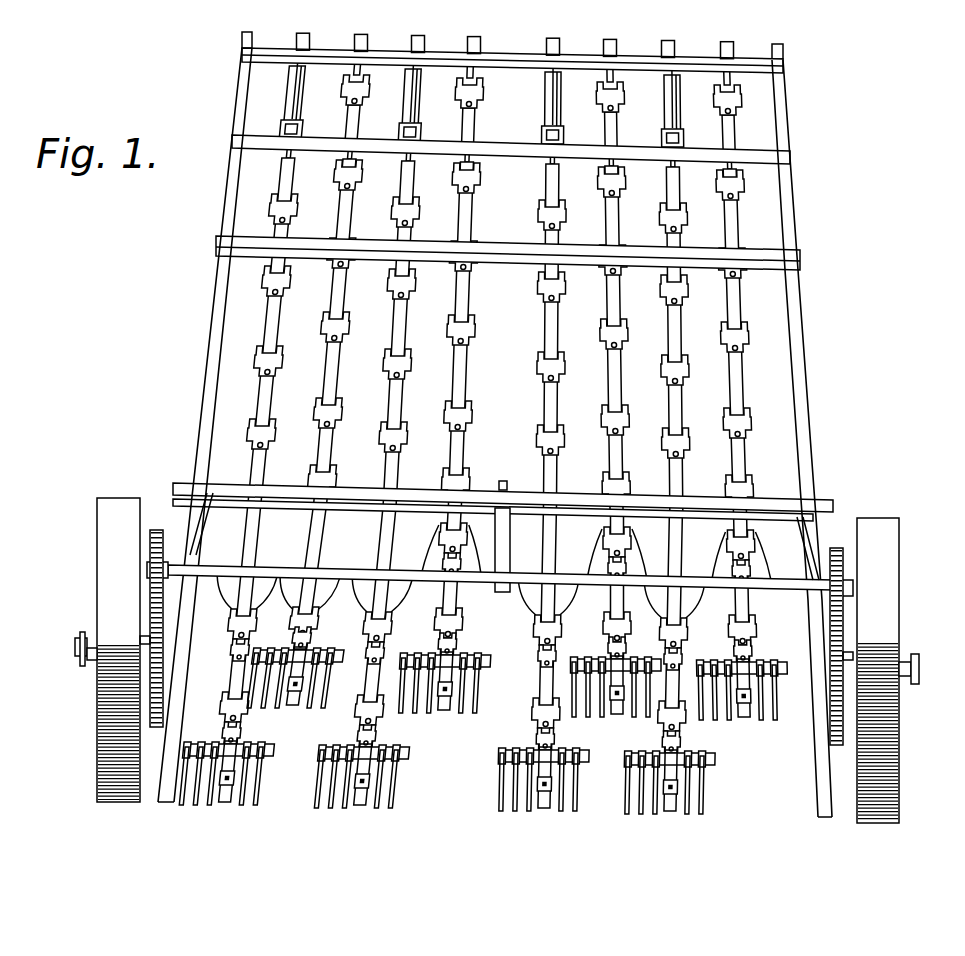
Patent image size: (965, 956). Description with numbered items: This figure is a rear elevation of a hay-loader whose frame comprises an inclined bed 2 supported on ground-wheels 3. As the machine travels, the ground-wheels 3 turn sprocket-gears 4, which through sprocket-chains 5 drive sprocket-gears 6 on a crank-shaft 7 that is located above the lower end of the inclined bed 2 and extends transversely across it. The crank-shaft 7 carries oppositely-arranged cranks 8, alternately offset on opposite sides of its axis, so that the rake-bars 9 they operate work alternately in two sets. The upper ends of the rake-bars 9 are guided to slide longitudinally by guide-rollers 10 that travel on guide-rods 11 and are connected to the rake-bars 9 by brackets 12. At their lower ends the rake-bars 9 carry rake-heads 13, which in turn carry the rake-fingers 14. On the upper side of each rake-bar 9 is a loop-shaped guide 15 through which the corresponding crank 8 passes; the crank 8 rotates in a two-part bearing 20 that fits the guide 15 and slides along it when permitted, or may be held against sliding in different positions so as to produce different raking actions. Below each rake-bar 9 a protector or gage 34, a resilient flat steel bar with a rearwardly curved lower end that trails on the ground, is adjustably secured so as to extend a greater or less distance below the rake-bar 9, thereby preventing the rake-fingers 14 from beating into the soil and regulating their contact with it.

The inclined bed 2 is at (206, 366).
The ground-wheels 3 is at (100, 523).
The sprocket-gears 4 is at (130, 696).
The sprocket-chains 5 is at (153, 595).
The sprocket-gears 6 is at (147, 568).
The crank-shaft 7 is at (193, 565).
The cranks 8 is at (330, 552).
The rake-bars 9 is at (360, 44).
The guide-rollers 10 is at (289, 128).
The guide-rods 11 is at (297, 110).
The brackets 12 is at (301, 132).
The rake-heads 13 is at (405, 660).
The rake-fingers 14 is at (378, 715).
The guide 15 is at (302, 527).
The bearing 20 is at (301, 547).
The protector or gage 34 is at (292, 702).